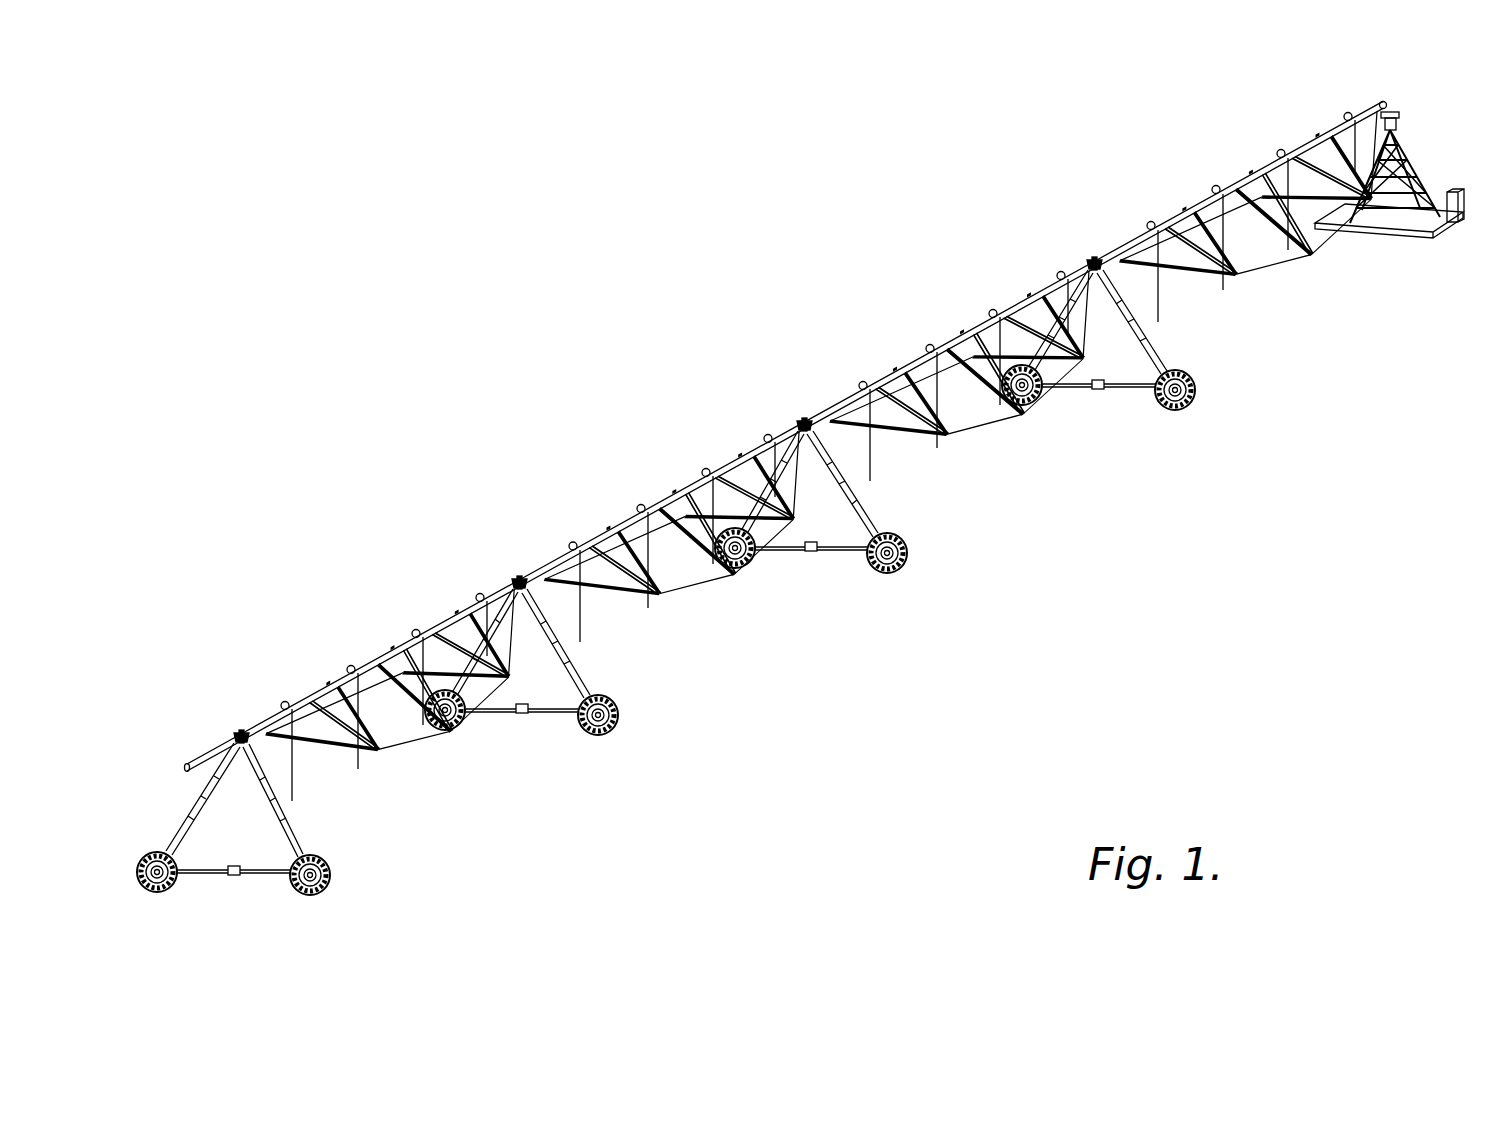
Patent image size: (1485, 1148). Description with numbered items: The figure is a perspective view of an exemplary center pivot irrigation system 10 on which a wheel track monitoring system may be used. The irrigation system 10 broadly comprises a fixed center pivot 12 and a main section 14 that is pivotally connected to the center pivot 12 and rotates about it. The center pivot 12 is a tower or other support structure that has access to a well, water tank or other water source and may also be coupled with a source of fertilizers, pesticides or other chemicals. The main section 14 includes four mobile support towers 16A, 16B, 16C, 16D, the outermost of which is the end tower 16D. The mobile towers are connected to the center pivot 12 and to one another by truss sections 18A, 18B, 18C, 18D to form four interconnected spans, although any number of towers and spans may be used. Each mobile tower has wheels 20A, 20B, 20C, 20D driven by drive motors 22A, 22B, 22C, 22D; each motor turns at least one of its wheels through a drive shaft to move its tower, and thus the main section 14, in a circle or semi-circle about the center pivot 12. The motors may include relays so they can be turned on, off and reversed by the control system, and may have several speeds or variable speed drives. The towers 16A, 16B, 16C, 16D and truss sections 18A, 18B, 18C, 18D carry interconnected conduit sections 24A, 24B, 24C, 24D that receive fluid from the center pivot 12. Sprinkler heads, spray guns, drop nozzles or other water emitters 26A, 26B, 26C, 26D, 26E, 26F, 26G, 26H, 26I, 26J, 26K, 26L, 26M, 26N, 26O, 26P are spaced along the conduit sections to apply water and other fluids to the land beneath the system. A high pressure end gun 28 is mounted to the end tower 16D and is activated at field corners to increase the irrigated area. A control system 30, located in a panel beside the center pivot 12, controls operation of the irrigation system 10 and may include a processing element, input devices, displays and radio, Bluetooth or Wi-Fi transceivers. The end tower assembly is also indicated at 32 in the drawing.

The irrigation system 10 is at (631, 289).
The center pivot 12 is at (1424, 128).
The main section 14 is at (912, 241).
The mobile support tower 16A is at (1121, 216).
The mobile support tower 16B is at (834, 388).
The mobile support tower 16C is at (546, 558).
The end tower 16D is at (258, 716).
The truss section 18A is at (1328, 256).
The truss section 18B is at (992, 434).
The truss section 18C is at (761, 584).
The truss section 18D is at (409, 757).
The wheel 20A is at (1194, 405).
The wheel 20B is at (906, 554).
The wheel 20C is at (619, 713).
The wheel 20D is at (331, 878).
The drive motor 22A is at (1108, 388).
The drive motor 22B is at (819, 550).
The drive motor 22C is at (530, 712).
The drive motor 22D is at (245, 874).
The conduit section 24A is at (1312, 138).
The conduit section 24B is at (1022, 300).
The conduit section 24C is at (741, 457).
The conduit section 24D is at (390, 656).
The water emitter 26A is at (1393, 188).
The water emitter 26B is at (1288, 250).
The water emitter 26C is at (1224, 289).
The water emitter 26D is at (1159, 319).
The water emitter 26E is at (1070, 364).
The water emitter 26F is at (1010, 400).
The water emitter 26G is at (937, 450).
The water emitter 26H is at (871, 484).
The water emitter 26I is at (796, 528).
The water emitter 26J is at (704, 566).
The water emitter 26K is at (649, 607).
The water emitter 26L is at (581, 644).
The water emitter 26M is at (464, 694).
The water emitter 26N is at (422, 738).
The water emitter 26O is at (359, 767).
The water emitter 26P is at (293, 804).
The end gun 28 is at (190, 763).
The control system 30 is at (1458, 190).
The end tower 32 is at (236, 716).